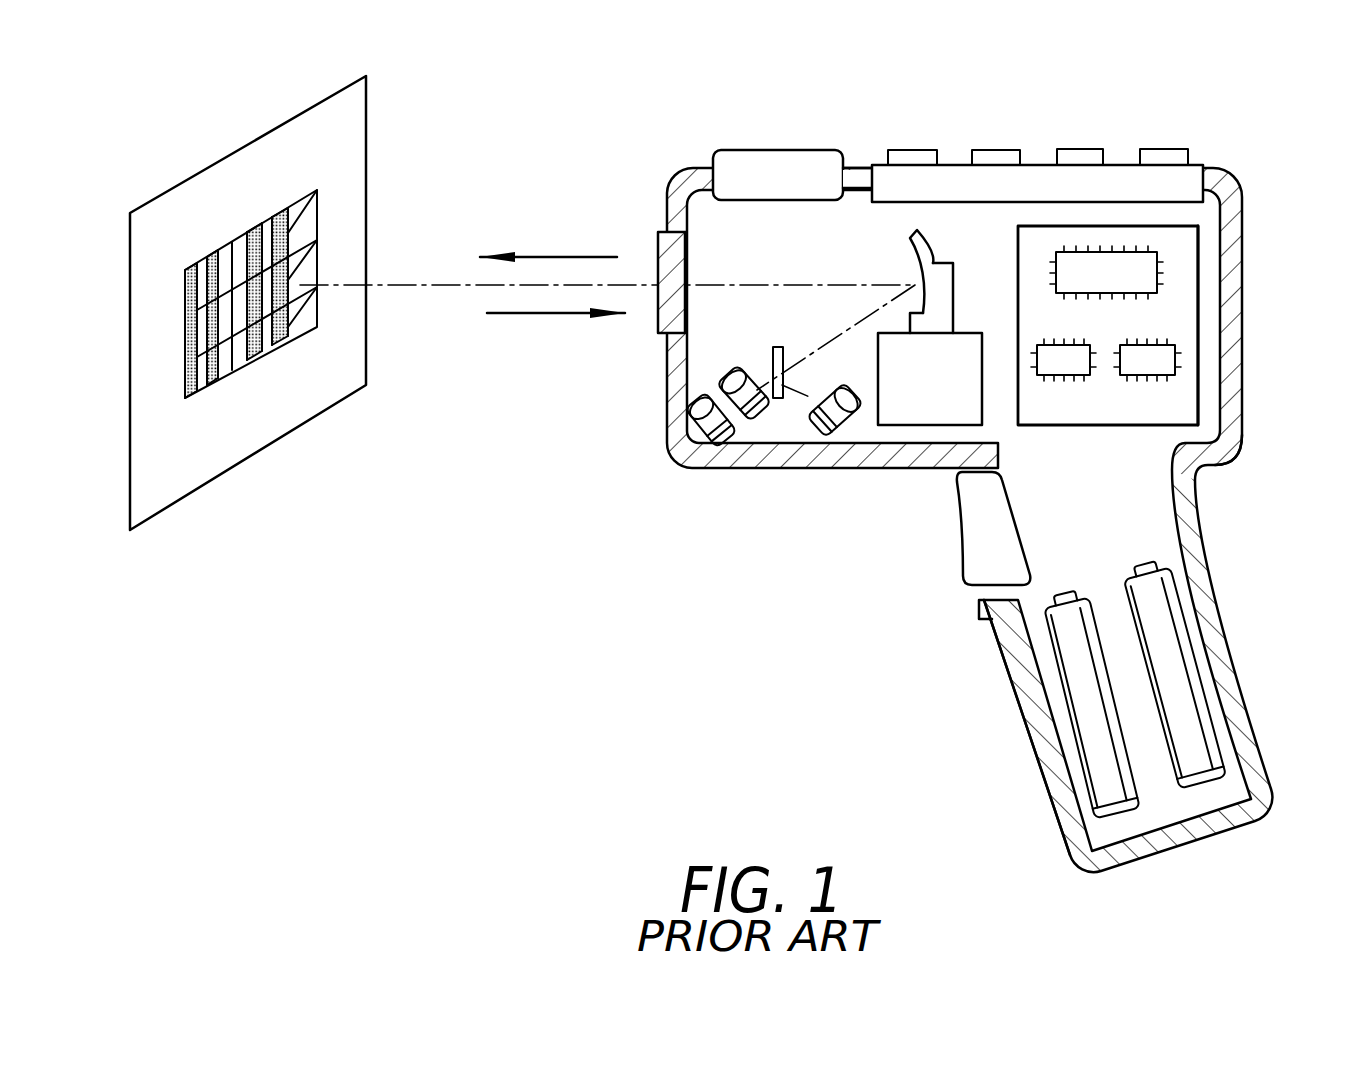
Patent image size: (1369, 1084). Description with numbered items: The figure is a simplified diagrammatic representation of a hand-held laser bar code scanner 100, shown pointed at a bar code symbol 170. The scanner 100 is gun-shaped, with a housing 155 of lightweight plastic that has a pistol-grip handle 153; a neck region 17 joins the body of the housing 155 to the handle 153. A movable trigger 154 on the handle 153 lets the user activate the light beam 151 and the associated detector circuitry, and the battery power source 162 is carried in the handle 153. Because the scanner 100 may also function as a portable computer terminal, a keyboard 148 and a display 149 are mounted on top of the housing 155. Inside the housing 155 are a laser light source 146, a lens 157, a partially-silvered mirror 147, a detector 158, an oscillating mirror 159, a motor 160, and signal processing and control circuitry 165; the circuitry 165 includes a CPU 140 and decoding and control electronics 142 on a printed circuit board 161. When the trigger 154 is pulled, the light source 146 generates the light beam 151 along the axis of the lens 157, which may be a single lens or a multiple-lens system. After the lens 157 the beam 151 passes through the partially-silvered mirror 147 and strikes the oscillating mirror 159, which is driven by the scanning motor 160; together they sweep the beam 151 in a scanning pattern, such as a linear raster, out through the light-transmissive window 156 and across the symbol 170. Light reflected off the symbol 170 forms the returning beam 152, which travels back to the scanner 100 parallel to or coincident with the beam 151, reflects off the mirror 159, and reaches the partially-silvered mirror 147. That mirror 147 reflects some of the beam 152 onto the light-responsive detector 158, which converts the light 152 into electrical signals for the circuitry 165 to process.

The bar code scanner 100 is at (802, 595).
The bar code symbol 170 is at (251, 232).
The light beam 151 is at (547, 257).
The reflected light beam 152 is at (529, 313).
The housing 155 is at (1243, 390).
The neck portion of housing 17 is at (1236, 452).
The pistol-grip handle 153 is at (1031, 720).
The light-transmissive window 156 is at (657, 242).
The display 149 is at (755, 160).
The keyboard 148 is at (1122, 180).
The signal processing and control circuitry 165 is at (1178, 313).
The printed circuit board 161 is at (1199, 278).
The CPU 140 is at (1065, 252).
The decoding and control electronics 142 is at (1127, 367).
The motor 160 is at (917, 390).
The oscillating mirror 159 is at (925, 252).
The partially-silvered mirror 147 is at (778, 347).
The lens 157 is at (732, 375).
The laser light source 146 is at (723, 440).
The detector 158 is at (822, 432).
The trigger 154 is at (990, 551).
The power source (battery) 162 is at (1196, 769).